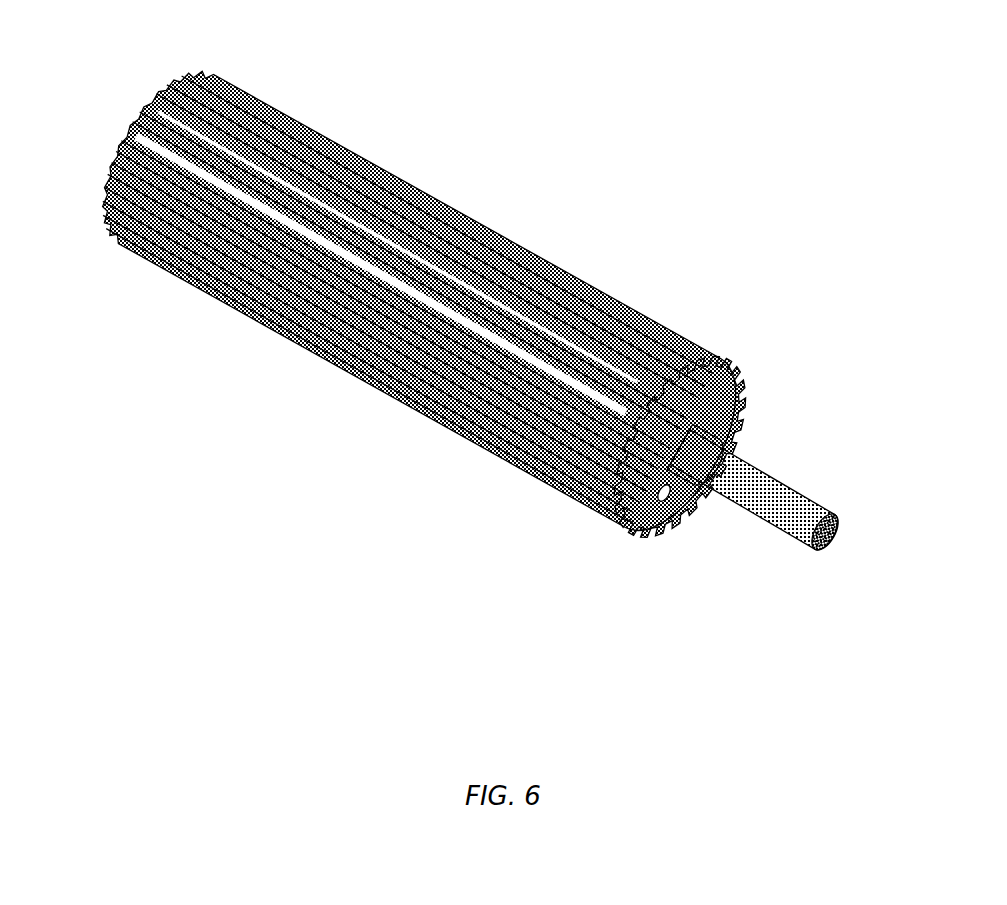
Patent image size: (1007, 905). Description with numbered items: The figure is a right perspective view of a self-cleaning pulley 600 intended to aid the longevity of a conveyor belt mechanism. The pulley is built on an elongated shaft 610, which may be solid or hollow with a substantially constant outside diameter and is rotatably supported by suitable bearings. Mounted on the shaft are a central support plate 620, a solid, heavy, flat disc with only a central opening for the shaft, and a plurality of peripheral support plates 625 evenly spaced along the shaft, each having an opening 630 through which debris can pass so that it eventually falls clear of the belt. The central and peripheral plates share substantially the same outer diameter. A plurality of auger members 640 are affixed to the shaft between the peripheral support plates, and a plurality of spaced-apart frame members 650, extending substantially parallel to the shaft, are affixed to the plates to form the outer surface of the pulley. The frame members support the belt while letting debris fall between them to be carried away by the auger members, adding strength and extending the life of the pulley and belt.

The self-cleaning pulley 600 is at (516, 310).
The elongated shaft 610 is at (833, 532).
The central support plate 620 is at (395, 300).
The peripheral support plates 625 is at (150, 128).
The opening 630 is at (657, 418).
The auger members 640 is at (207, 203).
The frame members 650 is at (500, 337).